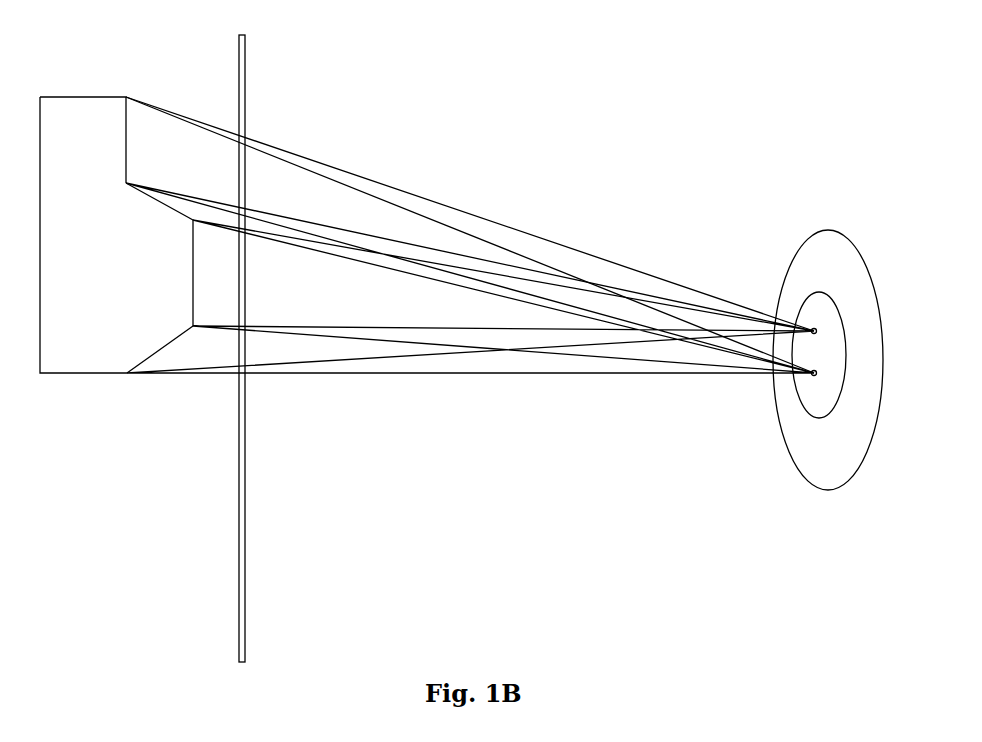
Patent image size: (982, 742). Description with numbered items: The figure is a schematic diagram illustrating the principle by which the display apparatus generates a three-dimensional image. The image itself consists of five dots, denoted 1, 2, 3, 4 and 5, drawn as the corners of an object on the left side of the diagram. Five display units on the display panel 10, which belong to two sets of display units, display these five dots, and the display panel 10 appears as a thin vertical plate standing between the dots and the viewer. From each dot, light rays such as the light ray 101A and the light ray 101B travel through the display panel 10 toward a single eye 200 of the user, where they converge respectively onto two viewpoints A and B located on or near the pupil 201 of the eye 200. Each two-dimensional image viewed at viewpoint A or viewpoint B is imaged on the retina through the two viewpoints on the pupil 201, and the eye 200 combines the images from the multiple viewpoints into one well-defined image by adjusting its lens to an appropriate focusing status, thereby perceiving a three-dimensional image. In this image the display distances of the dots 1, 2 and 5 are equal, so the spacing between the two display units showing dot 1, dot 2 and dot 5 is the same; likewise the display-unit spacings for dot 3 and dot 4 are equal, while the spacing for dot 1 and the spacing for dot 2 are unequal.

The dot 1 is at (88, 127).
The dot 2 is at (159, 189).
The dot 3 is at (183, 273).
The dot 4 is at (160, 345).
The dot 5 is at (87, 250).
The display panel 10 is at (247, 94).
The light ray 101A is at (526, 232).
The light ray 101B is at (302, 168).
The eye 200 is at (785, 275).
The pupil 201 is at (828, 290).
The viewpoint A is at (814, 321).
The viewpoint B is at (814, 384).